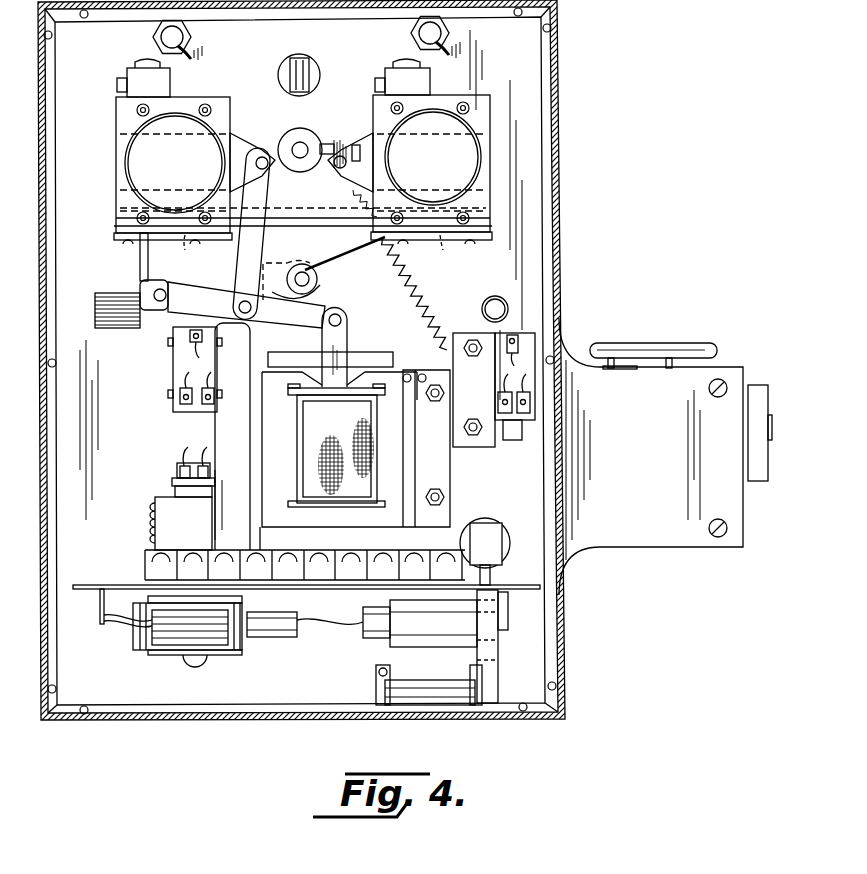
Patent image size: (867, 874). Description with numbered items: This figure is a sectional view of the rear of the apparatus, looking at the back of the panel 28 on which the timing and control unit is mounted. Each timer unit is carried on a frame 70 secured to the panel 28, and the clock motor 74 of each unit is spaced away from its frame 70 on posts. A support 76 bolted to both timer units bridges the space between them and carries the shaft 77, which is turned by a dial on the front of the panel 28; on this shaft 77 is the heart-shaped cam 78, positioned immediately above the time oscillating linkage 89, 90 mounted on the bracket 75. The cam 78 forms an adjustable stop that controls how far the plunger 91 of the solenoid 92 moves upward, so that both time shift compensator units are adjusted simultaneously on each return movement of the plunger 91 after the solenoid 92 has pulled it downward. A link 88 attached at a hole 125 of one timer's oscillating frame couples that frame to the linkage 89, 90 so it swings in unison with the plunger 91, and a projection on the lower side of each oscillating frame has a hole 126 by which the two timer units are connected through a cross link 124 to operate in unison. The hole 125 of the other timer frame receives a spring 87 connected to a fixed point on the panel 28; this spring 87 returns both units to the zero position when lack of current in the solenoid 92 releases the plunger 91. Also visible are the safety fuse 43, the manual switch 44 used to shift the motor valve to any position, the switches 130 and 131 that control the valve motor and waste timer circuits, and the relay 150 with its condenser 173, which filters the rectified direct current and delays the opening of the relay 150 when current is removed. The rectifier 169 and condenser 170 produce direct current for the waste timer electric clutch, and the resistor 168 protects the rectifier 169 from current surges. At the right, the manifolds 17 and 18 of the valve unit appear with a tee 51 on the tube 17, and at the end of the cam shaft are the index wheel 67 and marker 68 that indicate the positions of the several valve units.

The manifold 17 is at (657, 350).
The manifold 18 is at (616, 372).
The panel 28 is at (630, 548).
The safety fuse 43 is at (303, 140).
The manual switch 44 is at (312, 76).
The tee 51 is at (668, 372).
The index wheel 67 is at (757, 385).
The marker 68 is at (773, 425).
The frame 70 is at (120, 118).
The clock motor 74 is at (303, 161).
The bracket 75 is at (140, 272).
The support 76 is at (342, 266).
The shaft 77 is at (306, 266).
The heart-shaped cam 78 is at (281, 262).
The spring 87 is at (427, 306).
The link 88 is at (238, 278).
The time oscillating linkage 89 is at (292, 320).
The time oscillating linkage 90 is at (348, 345).
The plunger 91 is at (382, 358).
The solenoid 92 is at (318, 498).
The cross link 124 is at (302, 212).
The hole 125 is at (253, 152).
The hole 126 is at (330, 250).
The switch 130 is at (172, 370).
The switch 131 is at (176, 470).
The relay 150 is at (156, 538).
The resistor 168 is at (270, 638).
The rectifier 169 is at (157, 657).
The condenser 170 is at (415, 640).
The condenser 173 is at (225, 650).